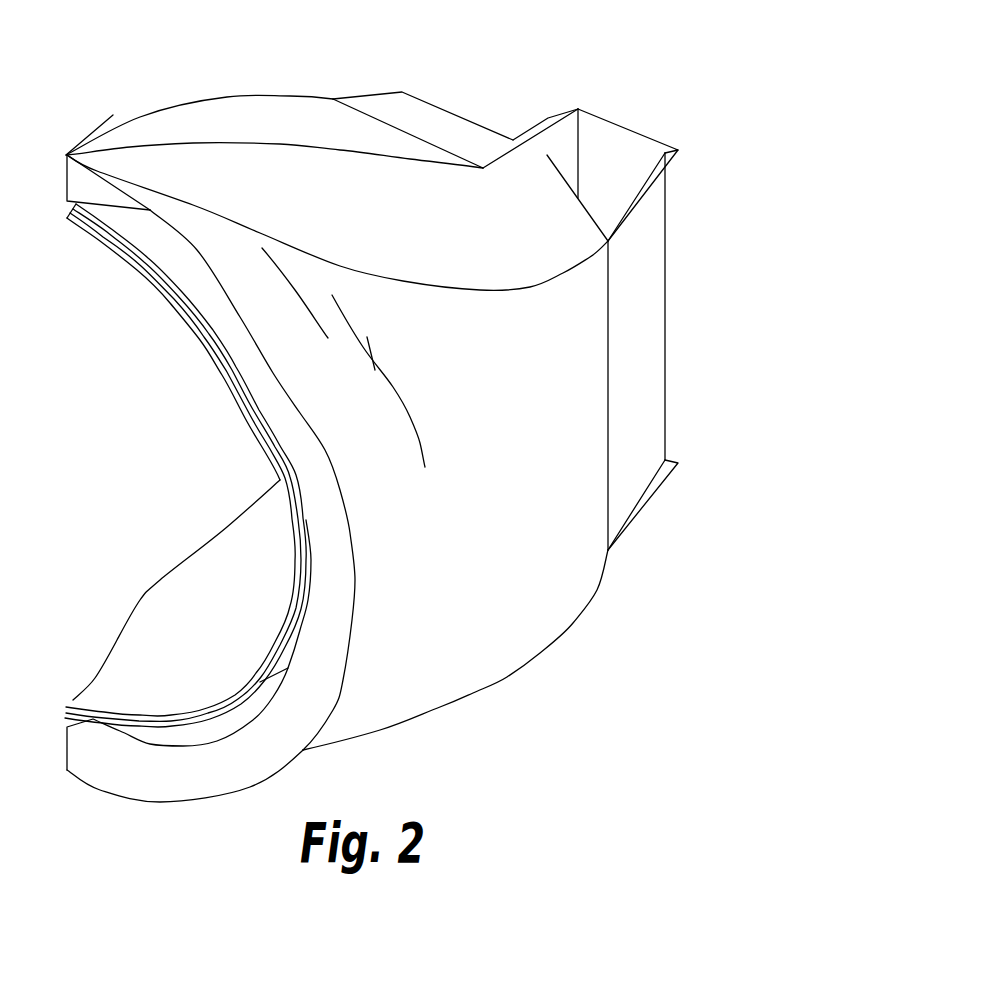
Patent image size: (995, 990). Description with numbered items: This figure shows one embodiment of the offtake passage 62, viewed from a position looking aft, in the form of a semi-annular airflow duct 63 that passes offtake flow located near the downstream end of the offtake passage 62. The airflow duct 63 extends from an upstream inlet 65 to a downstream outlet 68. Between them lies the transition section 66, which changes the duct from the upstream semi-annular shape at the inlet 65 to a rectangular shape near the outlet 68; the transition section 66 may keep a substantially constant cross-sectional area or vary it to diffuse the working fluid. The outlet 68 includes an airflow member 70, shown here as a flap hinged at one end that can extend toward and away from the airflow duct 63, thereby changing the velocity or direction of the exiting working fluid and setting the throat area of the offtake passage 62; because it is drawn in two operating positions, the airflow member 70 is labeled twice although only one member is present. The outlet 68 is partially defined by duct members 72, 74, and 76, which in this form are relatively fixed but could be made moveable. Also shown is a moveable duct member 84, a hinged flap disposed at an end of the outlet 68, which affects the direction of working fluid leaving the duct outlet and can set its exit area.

The offtake passage 62 is at (447, 473).
The airflow duct 63 is at (650, 638).
The upstream inlet 65 is at (137, 768).
The transition section 66 is at (542, 598).
The downstream outlet 68 is at (447, 421).
The airflow member 70 is at (578, 177).
The duct member 72 is at (640, 130).
The duct member 74 is at (658, 493).
The duct member 76 is at (560, 103).
The moveable duct member 84 is at (430, 100).